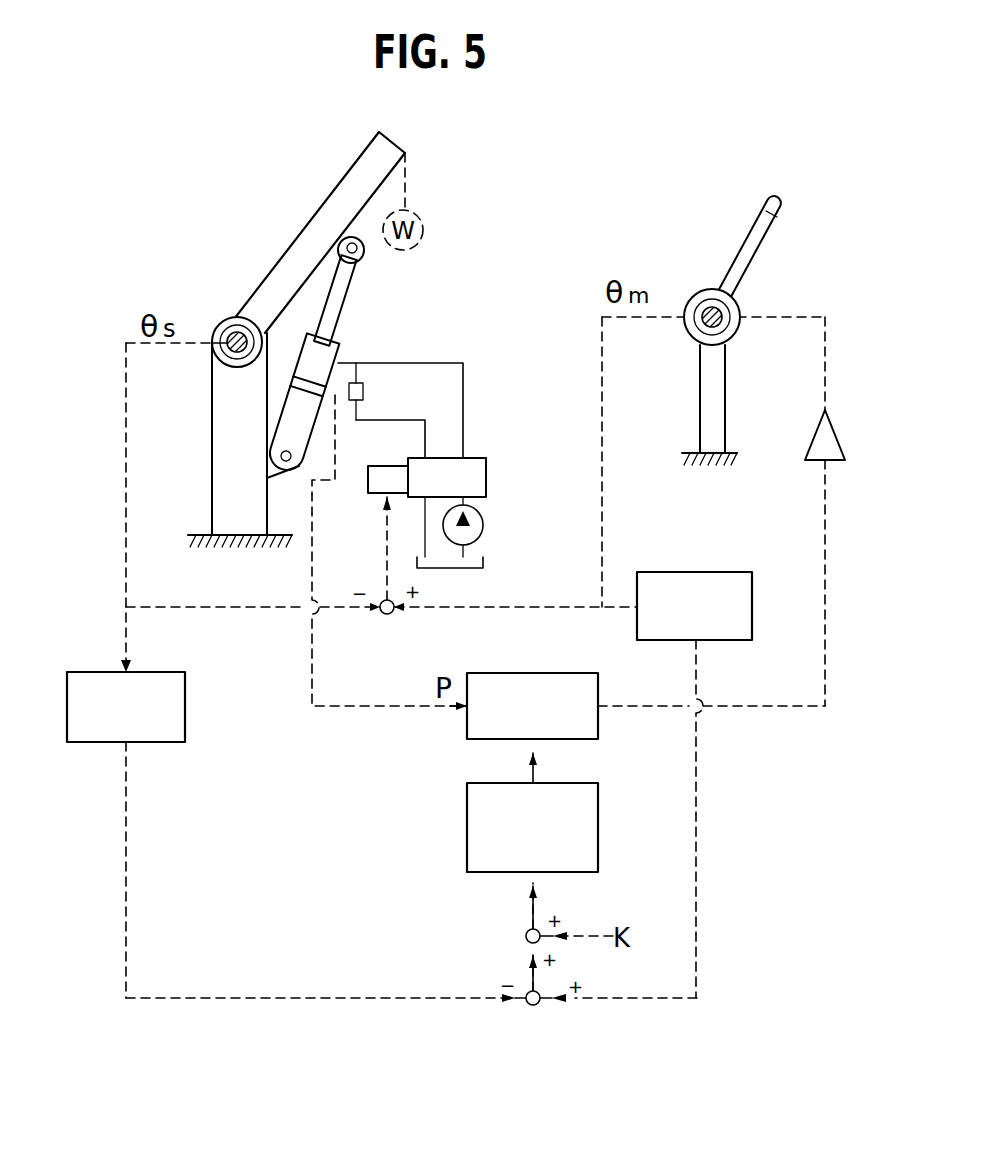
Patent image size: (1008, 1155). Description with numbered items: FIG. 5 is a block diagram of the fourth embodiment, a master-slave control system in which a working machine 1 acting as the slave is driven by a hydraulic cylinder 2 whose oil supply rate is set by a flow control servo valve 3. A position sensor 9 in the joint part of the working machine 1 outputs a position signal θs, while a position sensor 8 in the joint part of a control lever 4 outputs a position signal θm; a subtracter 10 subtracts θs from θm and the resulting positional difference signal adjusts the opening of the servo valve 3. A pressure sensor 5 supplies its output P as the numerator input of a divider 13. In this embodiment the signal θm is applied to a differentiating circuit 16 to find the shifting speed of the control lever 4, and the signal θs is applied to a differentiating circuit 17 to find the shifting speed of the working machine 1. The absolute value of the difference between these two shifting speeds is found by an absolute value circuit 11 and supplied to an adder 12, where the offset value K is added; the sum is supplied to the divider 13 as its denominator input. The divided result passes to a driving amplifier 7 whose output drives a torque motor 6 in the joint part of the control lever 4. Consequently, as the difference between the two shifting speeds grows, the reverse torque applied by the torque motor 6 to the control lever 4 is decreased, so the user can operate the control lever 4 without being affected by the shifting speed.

The working machine 1 is at (343, 175).
The hydraulic cylinder 2 is at (340, 345).
The servo valve 3 is at (477, 473).
The control lever 4 is at (773, 205).
The pressure sensor 5 is at (363, 393).
The torque motor 6 is at (733, 312).
The driving amplifier 7 is at (838, 433).
The position sensor 8 is at (708, 308).
The position sensor 9 is at (232, 337).
The subtracter 10 is at (387, 614).
The absolute value circuit 11 is at (605, 762).
The adder 12 is at (525, 932).
The divider 13 is at (532, 673).
The differentiating circuit 16 is at (718, 642).
The differentiating circuit 17 is at (168, 743).